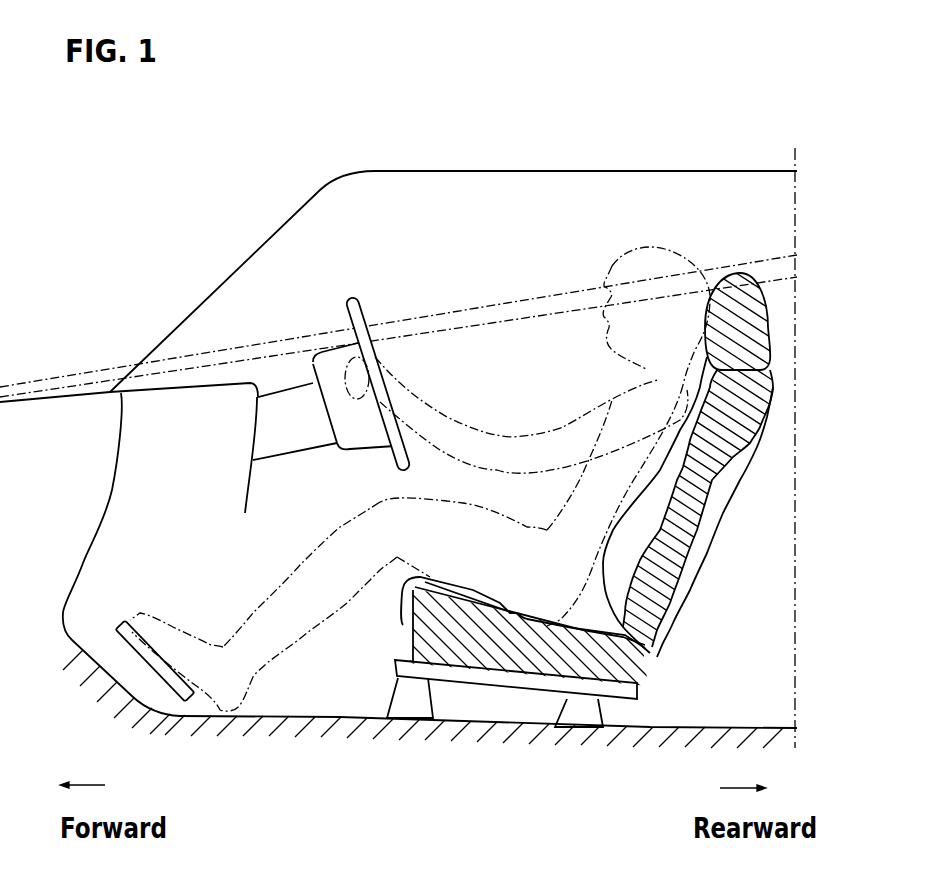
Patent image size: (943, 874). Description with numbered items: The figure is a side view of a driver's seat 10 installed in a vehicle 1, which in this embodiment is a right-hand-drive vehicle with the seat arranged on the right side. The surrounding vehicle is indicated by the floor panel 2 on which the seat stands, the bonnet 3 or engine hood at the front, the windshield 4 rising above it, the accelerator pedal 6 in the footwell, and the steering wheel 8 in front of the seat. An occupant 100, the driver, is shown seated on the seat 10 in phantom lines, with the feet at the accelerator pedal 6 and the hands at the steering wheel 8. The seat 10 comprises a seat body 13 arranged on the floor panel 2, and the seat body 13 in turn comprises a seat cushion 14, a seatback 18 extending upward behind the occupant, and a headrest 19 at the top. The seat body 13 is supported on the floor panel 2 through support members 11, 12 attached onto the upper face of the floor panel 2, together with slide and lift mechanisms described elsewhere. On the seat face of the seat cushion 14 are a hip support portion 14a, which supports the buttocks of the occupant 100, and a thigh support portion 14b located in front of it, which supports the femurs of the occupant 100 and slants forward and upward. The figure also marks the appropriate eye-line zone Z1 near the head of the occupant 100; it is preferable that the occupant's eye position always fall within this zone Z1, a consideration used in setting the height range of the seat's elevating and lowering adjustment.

The vehicle 1 is at (757, 153).
The floor panel 2 is at (780, 727).
The bonnet 3 is at (53, 395).
The windshield 4 is at (226, 281).
The accelerator pedal 6 is at (122, 622).
The steering wheel 8 is at (356, 306).
The seat 10 is at (586, 544).
The support member 11 is at (390, 697).
The support member 12 is at (603, 713).
The seat body 13 is at (718, 495).
The seat cushion 14 is at (542, 624).
The hip support portion 14a is at (547, 621).
The thigh support portion 14b is at (489, 602).
The seatback 18 is at (690, 543).
The headrest 19 is at (762, 328).
The occupant 100 is at (643, 243).
The eye-line zone Z1 is at (655, 294).